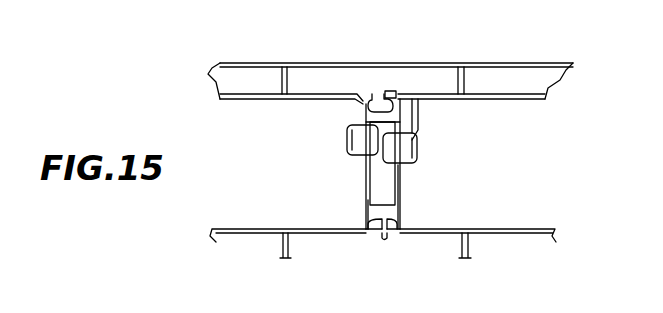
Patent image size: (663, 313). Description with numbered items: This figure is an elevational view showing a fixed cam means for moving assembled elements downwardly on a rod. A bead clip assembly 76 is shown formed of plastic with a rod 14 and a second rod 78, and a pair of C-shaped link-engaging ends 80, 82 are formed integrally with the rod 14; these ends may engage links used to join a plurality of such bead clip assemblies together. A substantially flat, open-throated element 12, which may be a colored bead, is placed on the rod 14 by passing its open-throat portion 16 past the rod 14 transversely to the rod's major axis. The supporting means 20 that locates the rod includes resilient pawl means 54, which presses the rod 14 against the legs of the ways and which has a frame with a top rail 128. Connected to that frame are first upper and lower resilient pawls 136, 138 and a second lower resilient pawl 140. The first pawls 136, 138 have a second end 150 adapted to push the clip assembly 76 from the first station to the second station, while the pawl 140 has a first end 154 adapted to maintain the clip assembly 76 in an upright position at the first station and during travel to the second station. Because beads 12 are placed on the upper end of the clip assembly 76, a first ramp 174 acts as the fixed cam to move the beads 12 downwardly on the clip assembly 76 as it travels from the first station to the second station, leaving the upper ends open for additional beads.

The open-throated element 12 is at (349, 133).
The rod 14 is at (370, 186).
The open-throat portion 16 is at (366, 143).
The supporting means 20 is at (272, 113).
The resilient pawl means 54 is at (297, 40).
The bead clip assembly 76 is at (352, 208).
The second rod 78 is at (402, 190).
The C-shaped link-engaging end 80 is at (373, 92).
The C-shaped link-engaging end 82 is at (387, 243).
The top rail 128 is at (498, 63).
The first upper resilient pawl 136 is at (305, 98).
The first lower resilient pawl 138 is at (252, 210).
The second lower resilient pawl 140 is at (505, 229).
The second end 150 is at (357, 235).
The first end 154 is at (405, 236).
The first ramp 174 is at (414, 113).